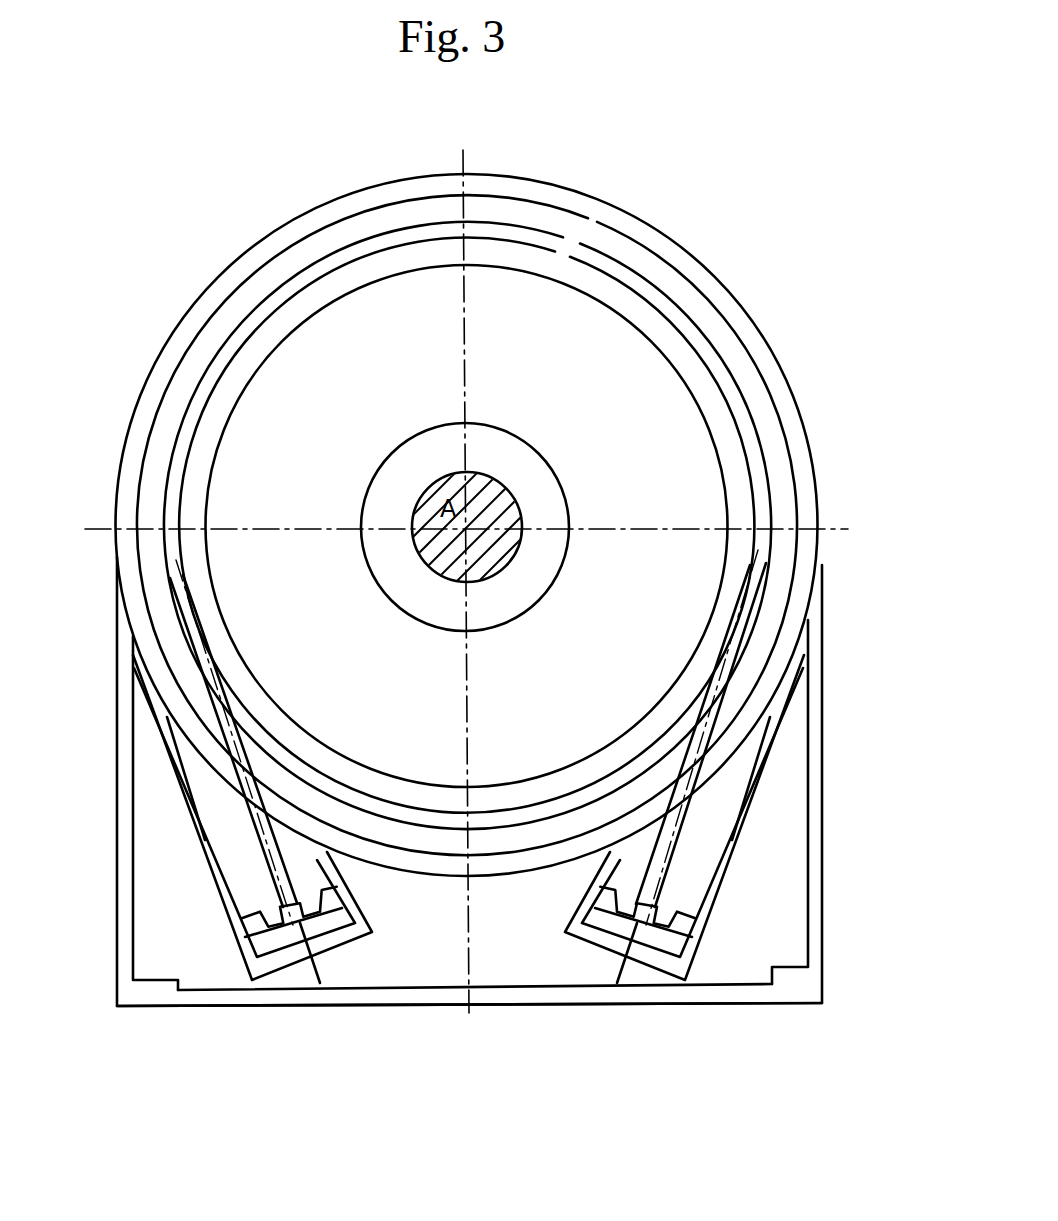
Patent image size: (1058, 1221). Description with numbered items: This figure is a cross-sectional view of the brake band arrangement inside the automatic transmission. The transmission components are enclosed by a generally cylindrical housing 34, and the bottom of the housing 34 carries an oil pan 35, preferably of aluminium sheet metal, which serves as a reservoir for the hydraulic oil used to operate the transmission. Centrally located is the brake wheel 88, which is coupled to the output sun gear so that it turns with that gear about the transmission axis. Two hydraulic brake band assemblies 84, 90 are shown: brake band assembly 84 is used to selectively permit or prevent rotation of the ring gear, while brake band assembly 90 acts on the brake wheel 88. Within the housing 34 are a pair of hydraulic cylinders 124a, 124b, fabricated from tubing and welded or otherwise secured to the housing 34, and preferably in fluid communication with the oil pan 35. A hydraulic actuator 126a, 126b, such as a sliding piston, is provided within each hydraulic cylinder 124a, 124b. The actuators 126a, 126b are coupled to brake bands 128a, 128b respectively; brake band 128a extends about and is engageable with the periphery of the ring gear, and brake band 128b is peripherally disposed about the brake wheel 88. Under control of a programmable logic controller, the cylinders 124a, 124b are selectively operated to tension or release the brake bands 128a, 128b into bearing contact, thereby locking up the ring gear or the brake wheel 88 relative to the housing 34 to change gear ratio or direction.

The brake wheel 88 is at (523, 253).
The brake band assembly 90 is at (606, 273).
The brake band assembly 84 is at (188, 825).
The brake band 128a is at (280, 860).
The brake band 128b is at (700, 827).
The housing 34 is at (129, 952).
The oil pan 35 is at (750, 990).
The hydraulic cylinder 124a is at (353, 893).
The hydraulic cylinder 124b is at (592, 880).
The hydraulic actuator 126a is at (332, 932).
The hydraulic actuator 126b is at (640, 923).